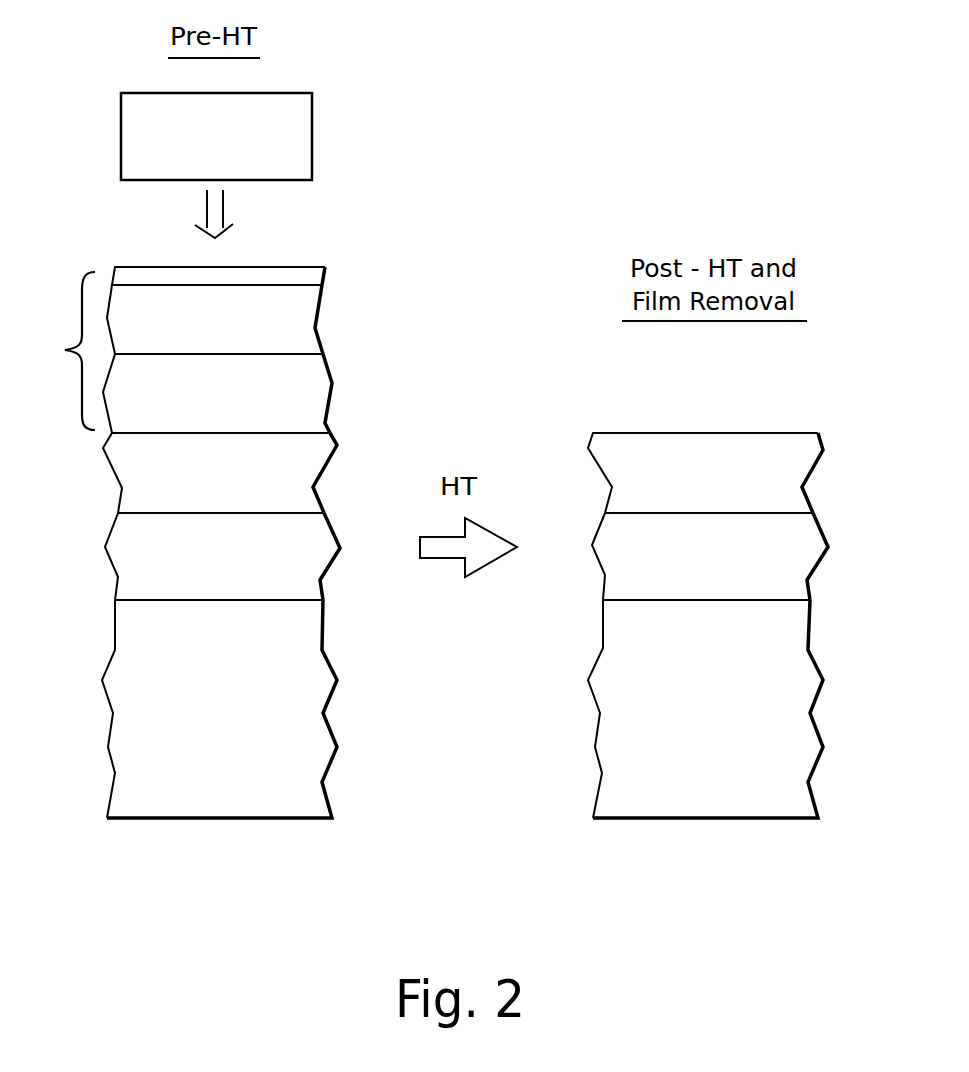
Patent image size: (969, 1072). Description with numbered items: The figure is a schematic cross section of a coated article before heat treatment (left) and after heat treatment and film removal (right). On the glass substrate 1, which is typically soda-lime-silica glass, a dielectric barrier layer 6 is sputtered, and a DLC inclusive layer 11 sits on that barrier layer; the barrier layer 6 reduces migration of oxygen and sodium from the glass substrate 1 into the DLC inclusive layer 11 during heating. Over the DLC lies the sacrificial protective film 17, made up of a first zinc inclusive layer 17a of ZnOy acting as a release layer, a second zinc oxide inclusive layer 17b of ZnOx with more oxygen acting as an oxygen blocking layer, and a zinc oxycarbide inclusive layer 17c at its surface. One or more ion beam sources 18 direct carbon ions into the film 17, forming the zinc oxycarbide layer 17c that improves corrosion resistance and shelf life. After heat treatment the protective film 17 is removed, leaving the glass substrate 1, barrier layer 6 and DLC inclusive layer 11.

The glass substrate 1 is at (318, 742).
The barrier layer 6 is at (300, 583).
The DLC inclusive layer 11 is at (318, 445).
The sacrificial protective film 17 is at (229, 338).
The first zinc inclusive layer 17a is at (313, 375).
The second zinc oxide inclusive layer 17b is at (292, 310).
The zinc oxycarbide inclusive layer 17c is at (307, 275).
The ion beam source 18 is at (295, 135).